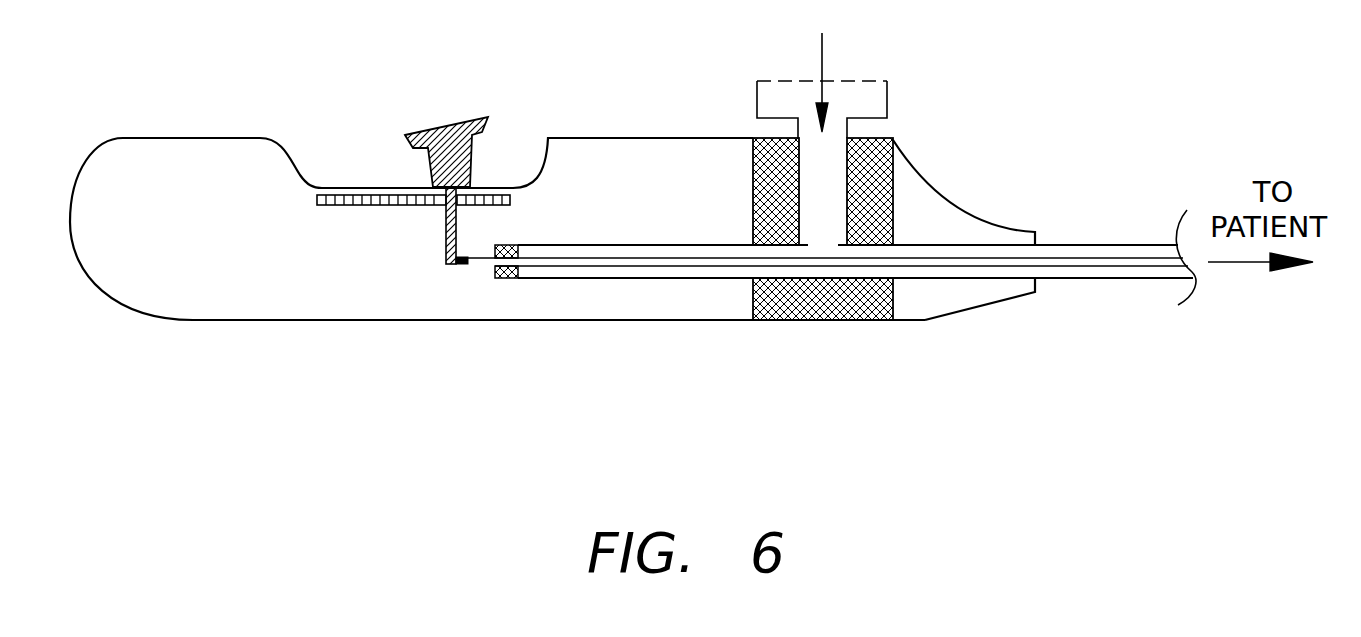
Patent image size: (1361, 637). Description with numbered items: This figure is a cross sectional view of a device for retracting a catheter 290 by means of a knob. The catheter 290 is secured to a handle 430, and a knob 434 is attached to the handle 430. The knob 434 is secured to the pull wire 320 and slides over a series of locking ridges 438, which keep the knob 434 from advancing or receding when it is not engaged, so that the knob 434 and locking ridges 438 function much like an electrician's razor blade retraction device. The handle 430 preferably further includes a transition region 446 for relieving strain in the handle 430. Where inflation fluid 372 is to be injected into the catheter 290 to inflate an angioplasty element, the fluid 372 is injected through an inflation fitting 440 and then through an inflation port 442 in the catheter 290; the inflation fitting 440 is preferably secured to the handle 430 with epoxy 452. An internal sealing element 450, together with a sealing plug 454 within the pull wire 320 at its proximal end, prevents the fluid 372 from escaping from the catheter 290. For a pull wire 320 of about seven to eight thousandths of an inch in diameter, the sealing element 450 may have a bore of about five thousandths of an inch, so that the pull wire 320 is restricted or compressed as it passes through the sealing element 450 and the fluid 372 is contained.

The handle 430 is at (312, 320).
The locking ridges 438 is at (350, 196).
The knob 434 is at (457, 125).
The sealing plug 454 is at (463, 268).
The pull wire 320 is at (473, 258).
The internal sealing element 450 is at (503, 280).
The inflation fitting 440 is at (887, 92).
The inflation fluid 372 is at (821, 68).
The inflation port 442 is at (822, 247).
The epoxy 452 is at (897, 148).
The transition region 446 is at (967, 293).
The catheter 290 is at (1120, 279).